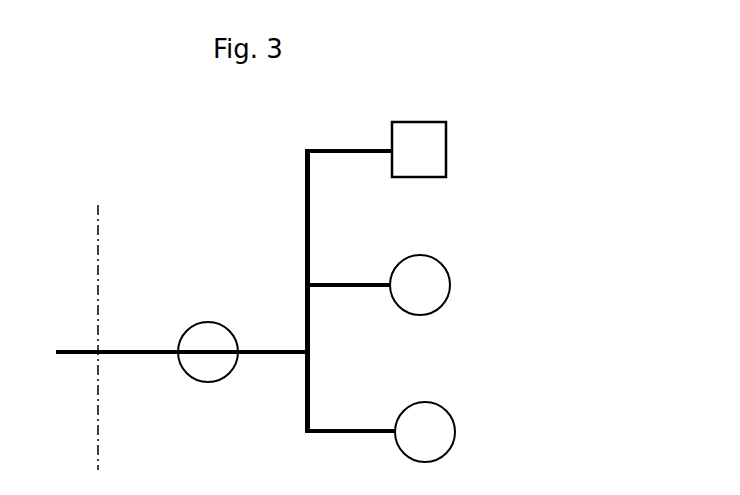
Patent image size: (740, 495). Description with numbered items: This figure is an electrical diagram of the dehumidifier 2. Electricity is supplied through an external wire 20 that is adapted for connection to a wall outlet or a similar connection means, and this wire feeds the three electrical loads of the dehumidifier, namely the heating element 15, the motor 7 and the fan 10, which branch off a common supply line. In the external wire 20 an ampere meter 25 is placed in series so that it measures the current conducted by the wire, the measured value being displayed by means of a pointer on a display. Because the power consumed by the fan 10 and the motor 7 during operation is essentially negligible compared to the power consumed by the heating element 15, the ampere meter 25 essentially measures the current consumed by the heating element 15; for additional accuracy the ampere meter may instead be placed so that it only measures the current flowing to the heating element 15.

The dehumidifier 2 is at (235, 243).
The motor 7 is at (456, 437).
The fan 10 is at (450, 285).
The heating element 15 is at (447, 153).
The external wire 20 is at (80, 348).
The ampere meter 25 is at (208, 382).